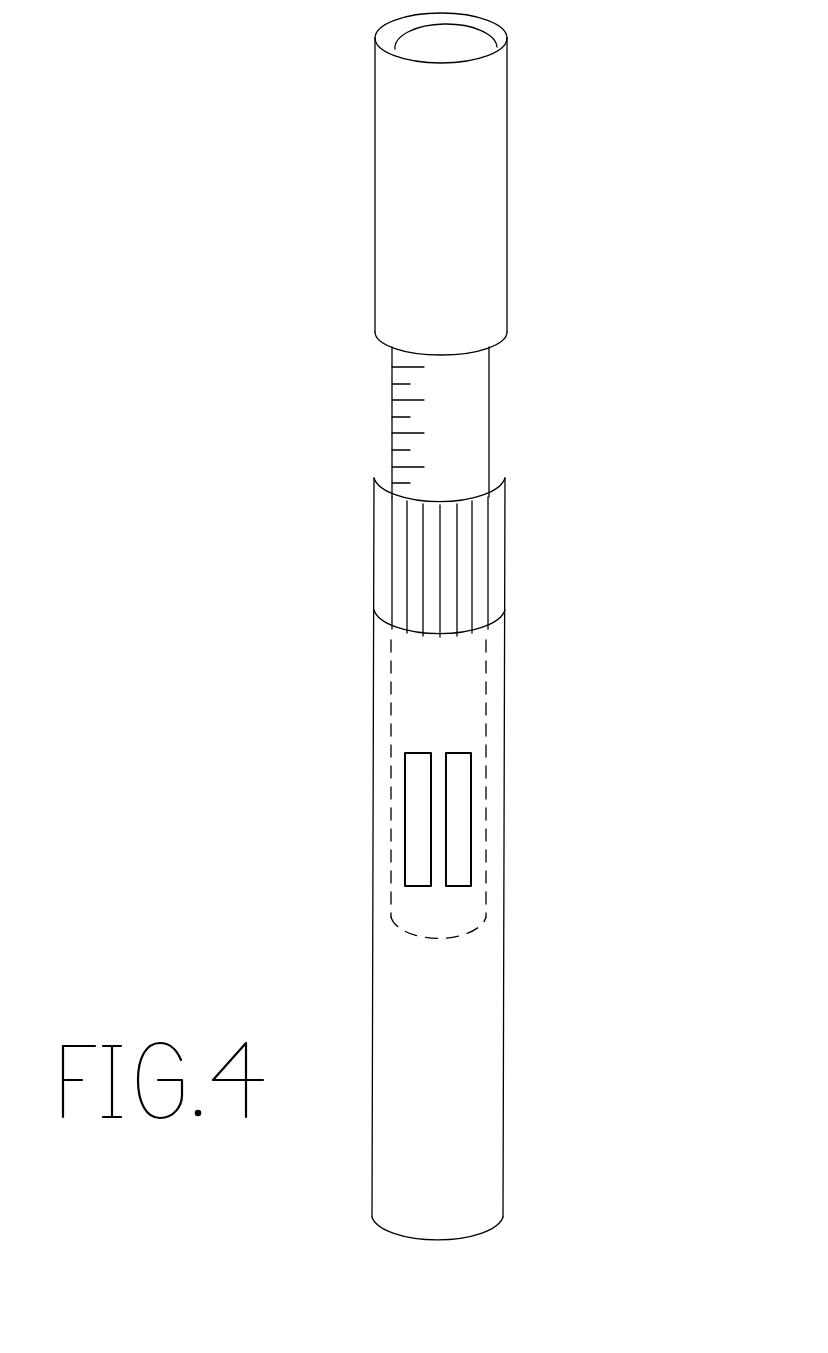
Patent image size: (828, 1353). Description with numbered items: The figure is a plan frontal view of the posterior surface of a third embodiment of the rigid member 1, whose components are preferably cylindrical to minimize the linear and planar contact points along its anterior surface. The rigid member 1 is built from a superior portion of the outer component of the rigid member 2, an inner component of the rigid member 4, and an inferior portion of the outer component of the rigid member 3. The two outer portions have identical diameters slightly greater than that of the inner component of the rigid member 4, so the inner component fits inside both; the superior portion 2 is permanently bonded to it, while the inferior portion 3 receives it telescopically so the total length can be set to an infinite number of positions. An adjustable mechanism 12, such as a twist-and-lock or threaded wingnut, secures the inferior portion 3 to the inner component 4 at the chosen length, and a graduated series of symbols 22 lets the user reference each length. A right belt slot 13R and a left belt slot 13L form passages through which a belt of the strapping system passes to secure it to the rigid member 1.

The rigid member 1 is at (213, 387).
The superior portion of the outer component of the rigid member 2 is at (447, 182).
The inferior portion of the outer component of the rigid member 3 is at (462, 1093).
The inner component of the rigid member 4 is at (445, 408).
The adjustable mechanism 12 is at (505, 550).
The left belt slot 13L is at (420, 828).
The right belt slot 13R is at (455, 828).
The graduated series of symbols 22 is at (392, 398).